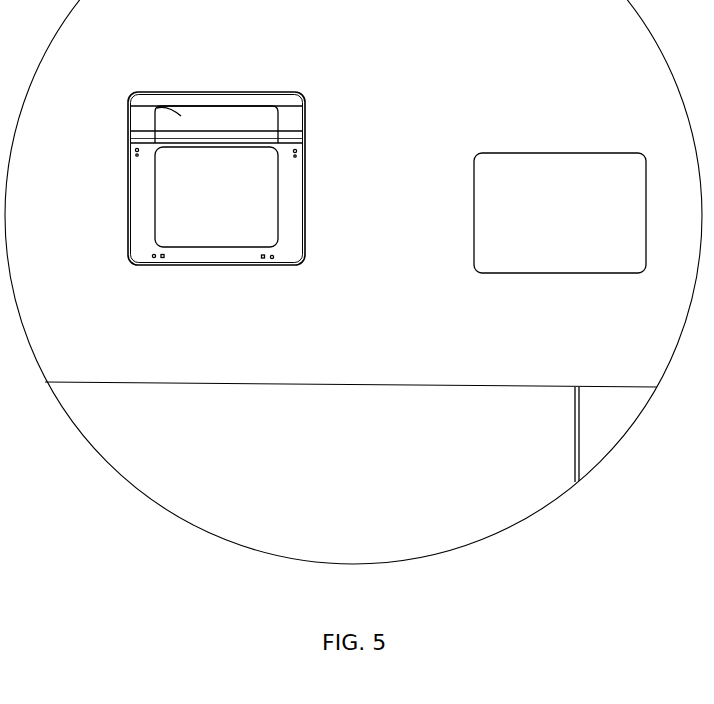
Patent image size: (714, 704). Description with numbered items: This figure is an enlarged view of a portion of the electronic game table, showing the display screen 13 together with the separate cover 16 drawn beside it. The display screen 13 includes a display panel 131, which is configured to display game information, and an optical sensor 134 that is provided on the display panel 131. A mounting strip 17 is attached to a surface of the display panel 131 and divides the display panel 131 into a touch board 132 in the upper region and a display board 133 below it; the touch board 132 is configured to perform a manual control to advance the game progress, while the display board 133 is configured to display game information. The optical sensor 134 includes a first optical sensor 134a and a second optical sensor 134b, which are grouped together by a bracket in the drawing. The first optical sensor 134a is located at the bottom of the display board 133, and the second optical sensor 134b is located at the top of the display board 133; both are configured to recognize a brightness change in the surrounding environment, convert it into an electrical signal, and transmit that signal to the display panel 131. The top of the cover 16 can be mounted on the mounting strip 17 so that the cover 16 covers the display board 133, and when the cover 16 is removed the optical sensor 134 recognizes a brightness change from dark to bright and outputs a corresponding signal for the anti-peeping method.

The display screen 13 is at (222, 92).
The cover 16 is at (577, 152).
The mounting strip 17 is at (258, 131).
The display panel 131 is at (212, 211).
The touch board 132 is at (130, 110).
The display board 133 is at (180, 197).
The optical sensor 134 is at (373, 136).
The first optical sensor 134a is at (153, 258).
The second optical sensor 134b is at (128, 151).